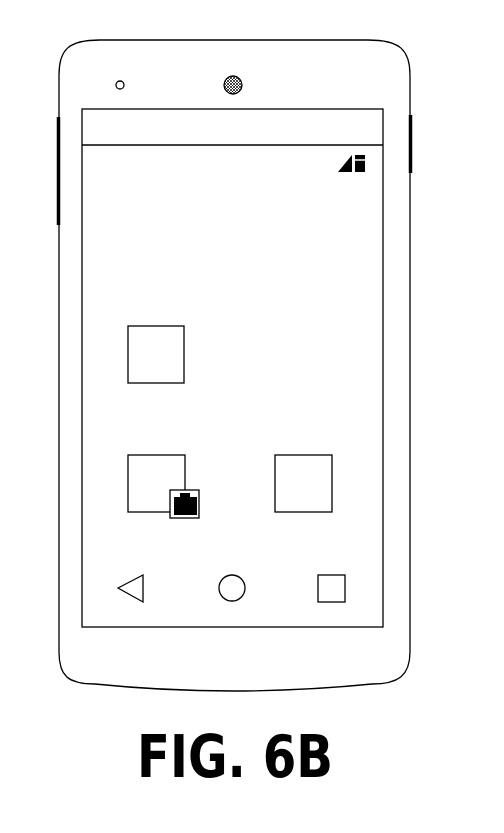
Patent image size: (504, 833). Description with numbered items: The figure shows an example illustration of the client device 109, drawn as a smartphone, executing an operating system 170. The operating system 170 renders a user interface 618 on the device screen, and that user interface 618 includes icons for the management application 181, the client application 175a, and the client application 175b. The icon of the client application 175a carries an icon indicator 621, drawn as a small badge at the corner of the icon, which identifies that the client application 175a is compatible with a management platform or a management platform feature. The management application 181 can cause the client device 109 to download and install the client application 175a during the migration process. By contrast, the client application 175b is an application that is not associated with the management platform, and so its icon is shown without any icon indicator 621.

The client device 109 is at (316, 40).
The user interface 618 is at (383, 198).
The operating system 170 is at (232, 132).
The management application 181 is at (157, 378).
The client application 175a is at (157, 507).
The client application 175b is at (304, 507).
The icon indicator 621 is at (172, 500).